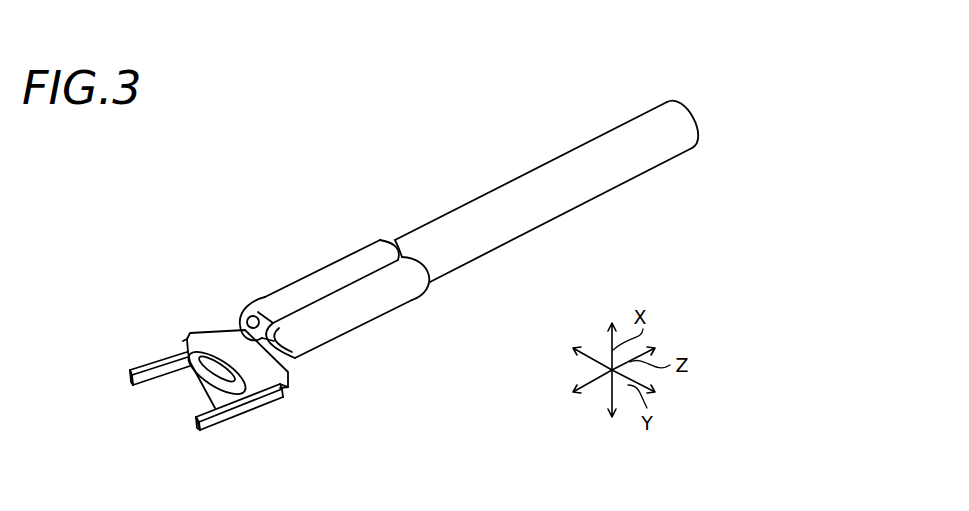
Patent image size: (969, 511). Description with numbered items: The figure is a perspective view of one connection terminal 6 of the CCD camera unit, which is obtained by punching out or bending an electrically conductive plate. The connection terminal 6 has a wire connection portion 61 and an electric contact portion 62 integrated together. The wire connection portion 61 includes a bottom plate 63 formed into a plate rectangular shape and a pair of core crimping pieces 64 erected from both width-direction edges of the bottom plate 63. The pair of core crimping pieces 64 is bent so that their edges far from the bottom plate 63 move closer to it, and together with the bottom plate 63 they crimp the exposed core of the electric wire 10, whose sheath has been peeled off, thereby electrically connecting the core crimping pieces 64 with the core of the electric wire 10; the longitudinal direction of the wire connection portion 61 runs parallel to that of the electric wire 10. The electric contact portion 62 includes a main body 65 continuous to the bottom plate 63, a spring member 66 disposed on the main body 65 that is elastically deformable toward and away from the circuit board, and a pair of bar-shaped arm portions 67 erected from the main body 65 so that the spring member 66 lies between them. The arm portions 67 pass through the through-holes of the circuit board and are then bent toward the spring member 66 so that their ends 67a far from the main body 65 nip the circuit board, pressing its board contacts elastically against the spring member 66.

The connection terminal 6 is at (232, 212).
The electric wire 10 is at (552, 183).
The wire connection portion 61 is at (266, 235).
The electric contact portion 62 is at (66, 310).
The bottom plate 63 is at (252, 307).
The core crimping pieces 64 is at (375, 290).
The main body 65 is at (212, 340).
The spring member 66 is at (207, 417).
The arm portions 67 is at (136, 363).
The ends 67a is at (132, 386).